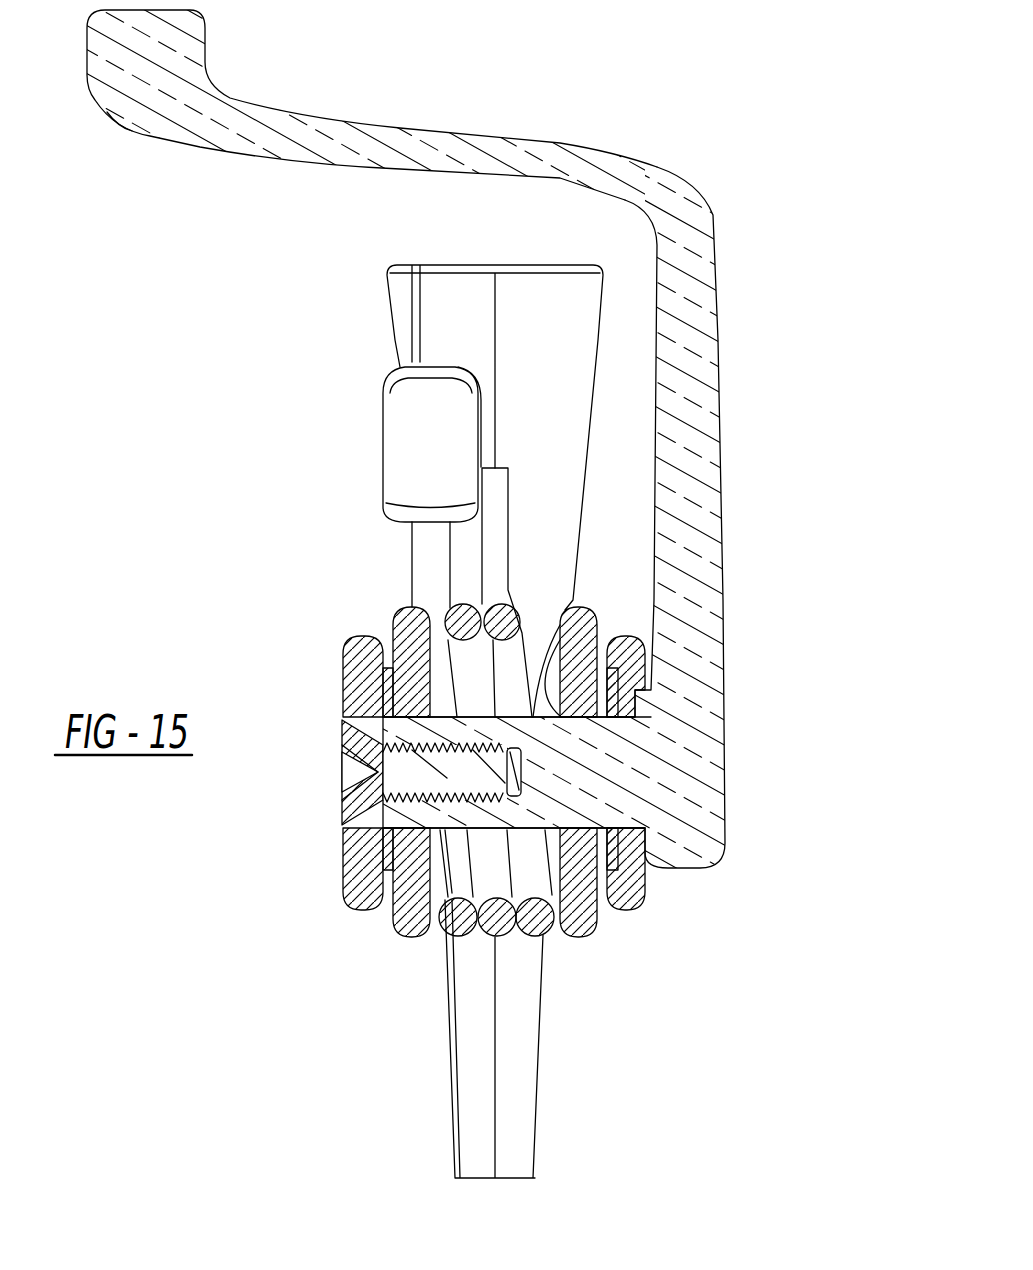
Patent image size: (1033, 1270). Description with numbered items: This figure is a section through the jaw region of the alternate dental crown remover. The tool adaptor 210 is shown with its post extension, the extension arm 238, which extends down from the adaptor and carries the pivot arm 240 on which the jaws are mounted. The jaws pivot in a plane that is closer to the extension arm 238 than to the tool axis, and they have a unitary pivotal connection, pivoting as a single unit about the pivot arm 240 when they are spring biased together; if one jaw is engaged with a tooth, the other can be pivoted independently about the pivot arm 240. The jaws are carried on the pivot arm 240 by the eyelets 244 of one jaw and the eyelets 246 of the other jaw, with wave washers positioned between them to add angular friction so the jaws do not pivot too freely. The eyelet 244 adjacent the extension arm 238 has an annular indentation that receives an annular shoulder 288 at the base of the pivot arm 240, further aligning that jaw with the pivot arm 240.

The tool adaptor 210 is at (237, 98).
The extension arm 238 is at (720, 402).
The pivot arm 240 is at (517, 822).
The eyelets 244 is at (618, 665).
The eyelets 246 is at (413, 938).
The annular shoulder 288 is at (637, 708).